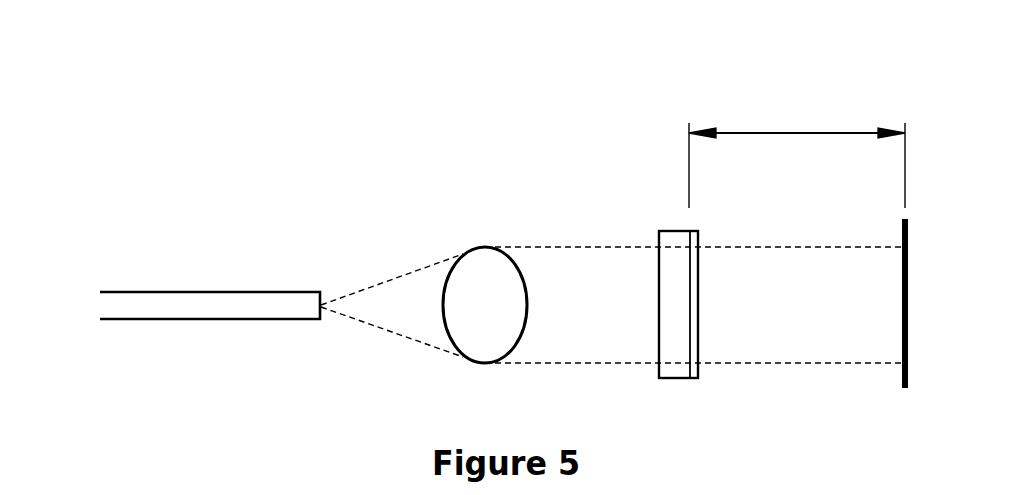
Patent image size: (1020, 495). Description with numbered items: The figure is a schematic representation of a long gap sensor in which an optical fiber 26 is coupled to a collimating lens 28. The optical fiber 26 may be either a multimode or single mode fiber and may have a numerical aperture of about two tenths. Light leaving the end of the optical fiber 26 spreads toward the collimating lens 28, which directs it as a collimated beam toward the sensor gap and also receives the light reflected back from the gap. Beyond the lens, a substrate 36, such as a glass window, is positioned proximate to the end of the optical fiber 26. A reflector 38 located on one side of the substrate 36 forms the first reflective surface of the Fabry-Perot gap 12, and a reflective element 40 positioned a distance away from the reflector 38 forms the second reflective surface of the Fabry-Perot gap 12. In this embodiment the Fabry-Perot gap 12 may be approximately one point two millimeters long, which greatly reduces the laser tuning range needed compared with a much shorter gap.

The Fabry-Perot gap 12 is at (787, 133).
The optical fiber 26 is at (207, 312).
The collimating lens 28 is at (477, 283).
The substrate 36 is at (670, 345).
The reflector 38 is at (690, 307).
The reflective element 40 is at (903, 330).